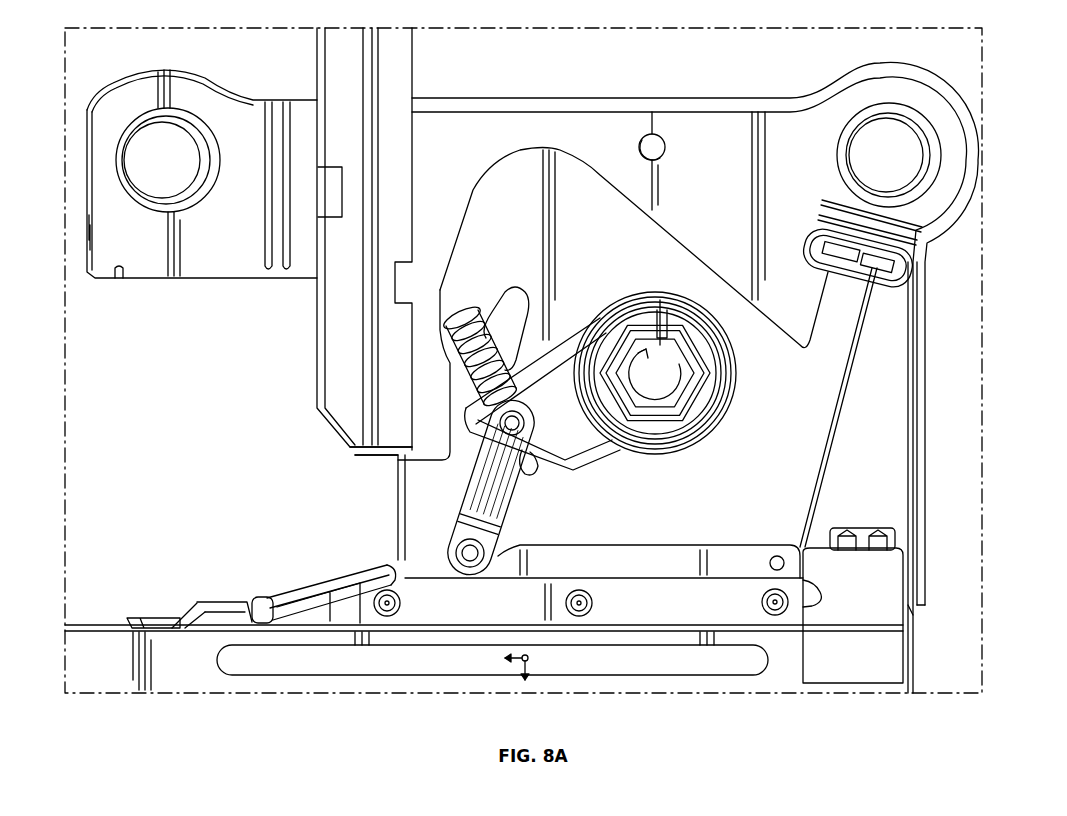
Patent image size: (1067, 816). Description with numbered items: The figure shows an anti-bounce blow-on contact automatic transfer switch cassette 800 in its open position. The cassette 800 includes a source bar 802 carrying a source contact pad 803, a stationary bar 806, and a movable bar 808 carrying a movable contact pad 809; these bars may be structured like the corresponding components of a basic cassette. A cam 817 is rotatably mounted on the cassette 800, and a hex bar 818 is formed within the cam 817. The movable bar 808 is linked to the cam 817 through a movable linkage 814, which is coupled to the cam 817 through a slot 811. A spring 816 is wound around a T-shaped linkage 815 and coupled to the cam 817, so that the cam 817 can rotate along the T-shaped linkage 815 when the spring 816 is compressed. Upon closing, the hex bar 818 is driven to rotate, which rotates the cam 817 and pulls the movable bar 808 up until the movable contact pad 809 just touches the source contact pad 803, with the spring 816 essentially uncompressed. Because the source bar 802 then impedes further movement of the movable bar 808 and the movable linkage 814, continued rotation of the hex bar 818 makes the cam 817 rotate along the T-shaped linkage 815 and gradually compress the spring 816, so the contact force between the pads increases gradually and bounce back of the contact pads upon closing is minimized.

The anti-bounce blow-on contact ATS cassette 800 is at (1000, 123).
The source bar 802 is at (342, 90).
The source contact pad 803 is at (370, 453).
The stationary bar 806 is at (677, 637).
The movable bar 808 is at (617, 603).
The movable contact pad 809 is at (350, 568).
The slot 811 is at (528, 475).
The movable linkage 814 is at (470, 505).
The T-shaped linkage 815 is at (468, 312).
The spring 816 is at (518, 292).
The cam 817 is at (733, 390).
The hex bar 818 is at (685, 332).